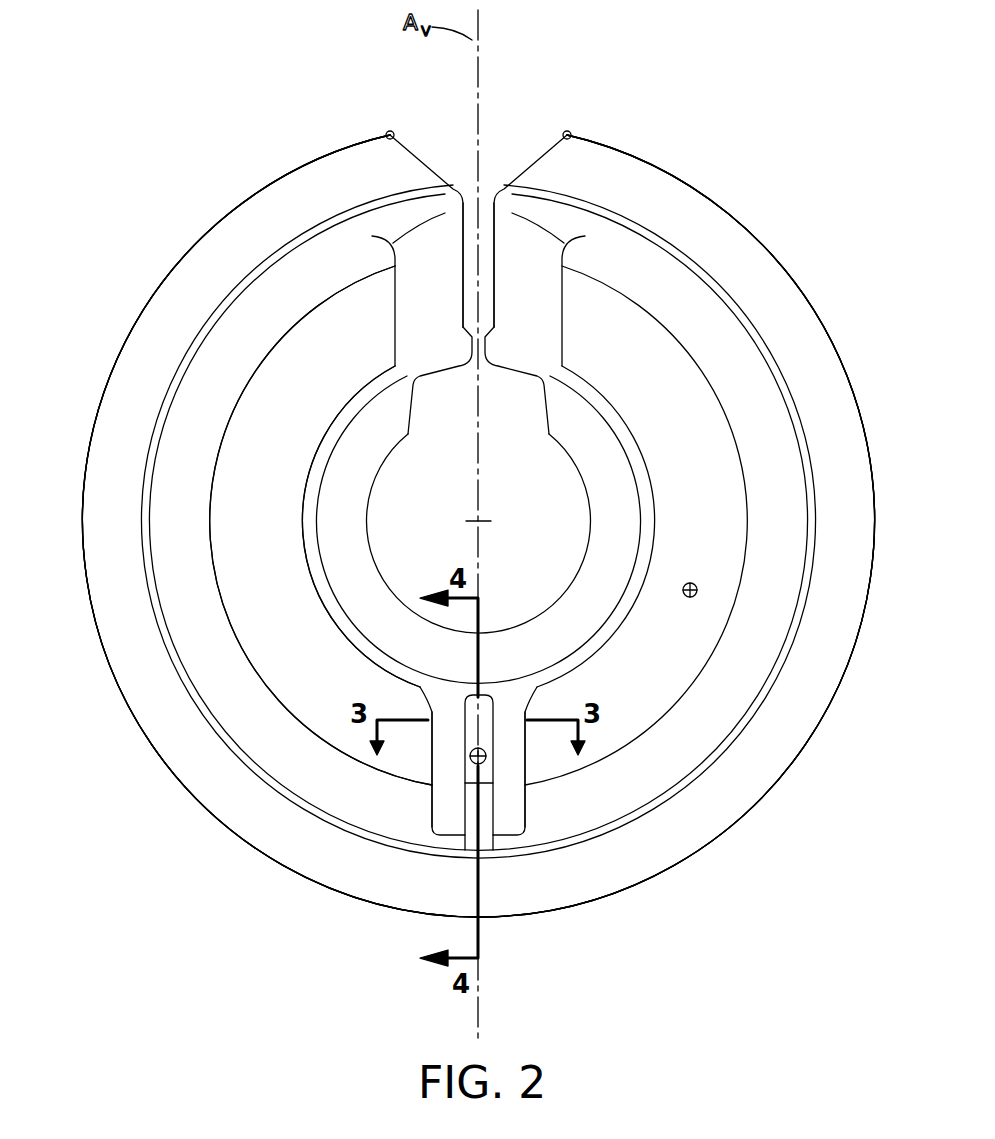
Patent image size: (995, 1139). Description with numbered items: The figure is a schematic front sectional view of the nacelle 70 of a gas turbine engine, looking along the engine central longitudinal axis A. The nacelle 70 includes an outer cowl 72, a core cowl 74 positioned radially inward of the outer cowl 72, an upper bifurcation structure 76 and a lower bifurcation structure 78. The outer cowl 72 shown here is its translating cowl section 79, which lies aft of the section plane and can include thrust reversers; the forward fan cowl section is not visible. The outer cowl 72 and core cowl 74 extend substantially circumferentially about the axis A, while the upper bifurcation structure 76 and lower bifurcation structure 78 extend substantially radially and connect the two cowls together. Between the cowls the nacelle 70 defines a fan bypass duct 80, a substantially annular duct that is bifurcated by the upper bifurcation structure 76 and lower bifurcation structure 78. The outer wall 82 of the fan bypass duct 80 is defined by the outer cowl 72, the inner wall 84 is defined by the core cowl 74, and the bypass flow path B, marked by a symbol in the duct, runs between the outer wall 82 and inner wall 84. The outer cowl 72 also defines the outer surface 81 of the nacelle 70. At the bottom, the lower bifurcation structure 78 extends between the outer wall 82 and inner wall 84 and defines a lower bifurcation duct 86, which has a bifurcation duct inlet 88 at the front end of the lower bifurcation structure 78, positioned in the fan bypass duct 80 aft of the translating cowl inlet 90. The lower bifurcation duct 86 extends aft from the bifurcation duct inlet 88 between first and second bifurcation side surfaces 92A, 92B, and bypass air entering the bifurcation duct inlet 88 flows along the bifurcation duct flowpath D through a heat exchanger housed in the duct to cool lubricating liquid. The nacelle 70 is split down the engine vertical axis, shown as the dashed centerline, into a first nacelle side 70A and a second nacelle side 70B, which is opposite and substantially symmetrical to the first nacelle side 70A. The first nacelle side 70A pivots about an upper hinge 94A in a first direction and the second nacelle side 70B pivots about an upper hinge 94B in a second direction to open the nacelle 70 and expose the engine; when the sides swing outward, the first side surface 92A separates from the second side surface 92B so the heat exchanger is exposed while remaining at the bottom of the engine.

The nacelle 70 is at (153, 124).
The first nacelle side 70A is at (130, 311).
The second nacelle side 70B is at (786, 248).
The outer cowl 72 is at (310, 150).
The core cowl 74 is at (330, 406).
The upper bifurcation structure 76 is at (383, 328).
The lower bifurcation structure 78 is at (420, 731).
The translating cowl section 79 is at (232, 235).
The fan bypass duct 80 is at (242, 420).
The outer surface 81 is at (165, 762).
The outer wall 82 is at (210, 580).
The inner wall 84 is at (302, 533).
The lower bifurcation duct 86 is at (452, 797).
The bifurcation duct inlet 88 is at (467, 838).
The translating cowl inlet 90 is at (340, 827).
The first bifurcation side surface 92A is at (432, 771).
The second bifurcation side surface 92B is at (527, 771).
The upper hinge 94A is at (390, 130).
The upper hinge 94B is at (567, 130).
The engine central longitudinal axis A is at (480, 518).
The bypass flow path B is at (690, 583).
The bifurcation duct flowpath D is at (484, 751).